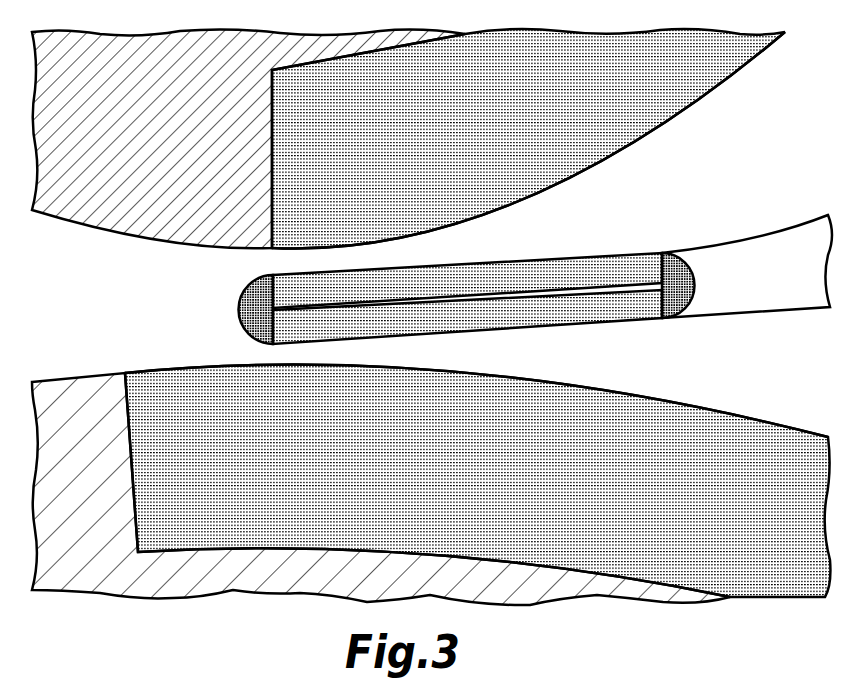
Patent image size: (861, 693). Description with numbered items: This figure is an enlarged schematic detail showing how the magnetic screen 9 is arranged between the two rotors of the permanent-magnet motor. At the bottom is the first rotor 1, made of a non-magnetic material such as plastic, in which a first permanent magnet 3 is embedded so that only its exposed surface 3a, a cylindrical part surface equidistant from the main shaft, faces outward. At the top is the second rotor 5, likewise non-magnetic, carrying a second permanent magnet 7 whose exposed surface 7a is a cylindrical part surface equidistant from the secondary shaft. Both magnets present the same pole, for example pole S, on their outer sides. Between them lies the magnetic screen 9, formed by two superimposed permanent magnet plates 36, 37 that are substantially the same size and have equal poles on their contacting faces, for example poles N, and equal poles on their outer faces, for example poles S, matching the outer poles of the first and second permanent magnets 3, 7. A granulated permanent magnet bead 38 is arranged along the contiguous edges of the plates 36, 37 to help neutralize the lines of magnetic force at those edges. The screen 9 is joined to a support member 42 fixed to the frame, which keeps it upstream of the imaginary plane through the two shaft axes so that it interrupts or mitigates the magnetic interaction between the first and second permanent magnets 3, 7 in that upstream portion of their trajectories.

The first rotor 1 is at (87, 389).
The first permanent magnet 3 is at (768, 441).
The exposed surface 3a is at (720, 408).
The second rotor 5 is at (108, 221).
The second permanent magnet 7 is at (705, 86).
The exposed surface 7a is at (684, 122).
The magnetic screen 9 is at (455, 286).
The permanent magnet plate 36 is at (593, 319).
The permanent magnet plate 37 is at (597, 264).
The granulated permanent magnet bead 38 is at (244, 296).
The support member 42 is at (758, 305).